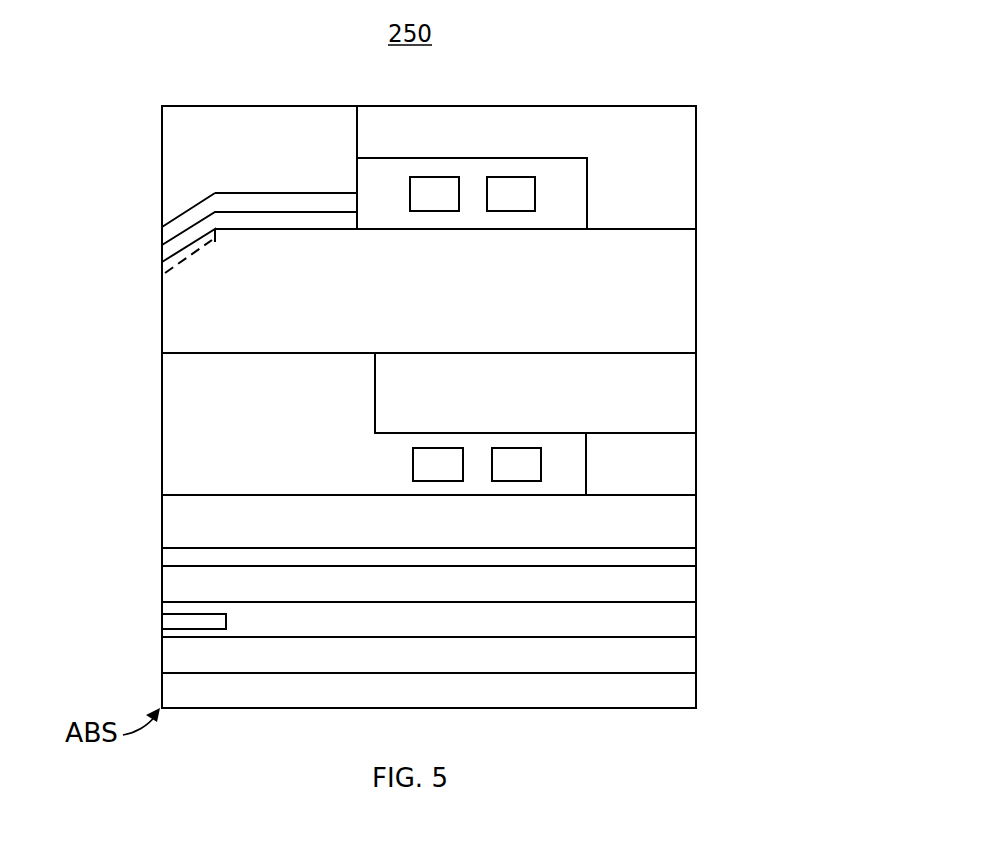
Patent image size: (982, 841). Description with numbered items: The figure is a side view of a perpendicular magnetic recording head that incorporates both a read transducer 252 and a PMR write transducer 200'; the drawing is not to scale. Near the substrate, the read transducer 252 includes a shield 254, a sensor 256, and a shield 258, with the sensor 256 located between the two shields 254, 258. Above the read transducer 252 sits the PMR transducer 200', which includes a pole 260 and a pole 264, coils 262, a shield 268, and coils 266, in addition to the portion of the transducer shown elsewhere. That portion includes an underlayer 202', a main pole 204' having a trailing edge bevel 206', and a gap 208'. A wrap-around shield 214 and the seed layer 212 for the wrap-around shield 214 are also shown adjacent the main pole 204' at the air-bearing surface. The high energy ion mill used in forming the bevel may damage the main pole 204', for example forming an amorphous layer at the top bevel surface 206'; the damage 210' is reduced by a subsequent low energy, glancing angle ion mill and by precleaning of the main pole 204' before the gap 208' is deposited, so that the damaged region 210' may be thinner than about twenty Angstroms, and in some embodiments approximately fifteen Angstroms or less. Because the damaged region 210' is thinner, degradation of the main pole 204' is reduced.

The wrap-around shield 214 is at (162, 158).
The seed layer 212 is at (188, 208).
The gap 208' is at (150, 236).
The trailing edge bevel 206' is at (139, 266).
The damaged region 210' is at (381, 291).
The main pole 204' is at (461, 291).
The PMR transducer 200' is at (505, 300).
The shield 268 is at (696, 177).
The coils 266 is at (563, 188).
The pole 264 is at (696, 398).
The coils 262 is at (563, 468).
The pole 260 is at (696, 530).
The underlayer 202' is at (389, 424).
The shield 258 is at (162, 588).
The sensor 256 is at (160, 620).
The shield 254 is at (696, 655).
The read transducer 252 is at (794, 655).